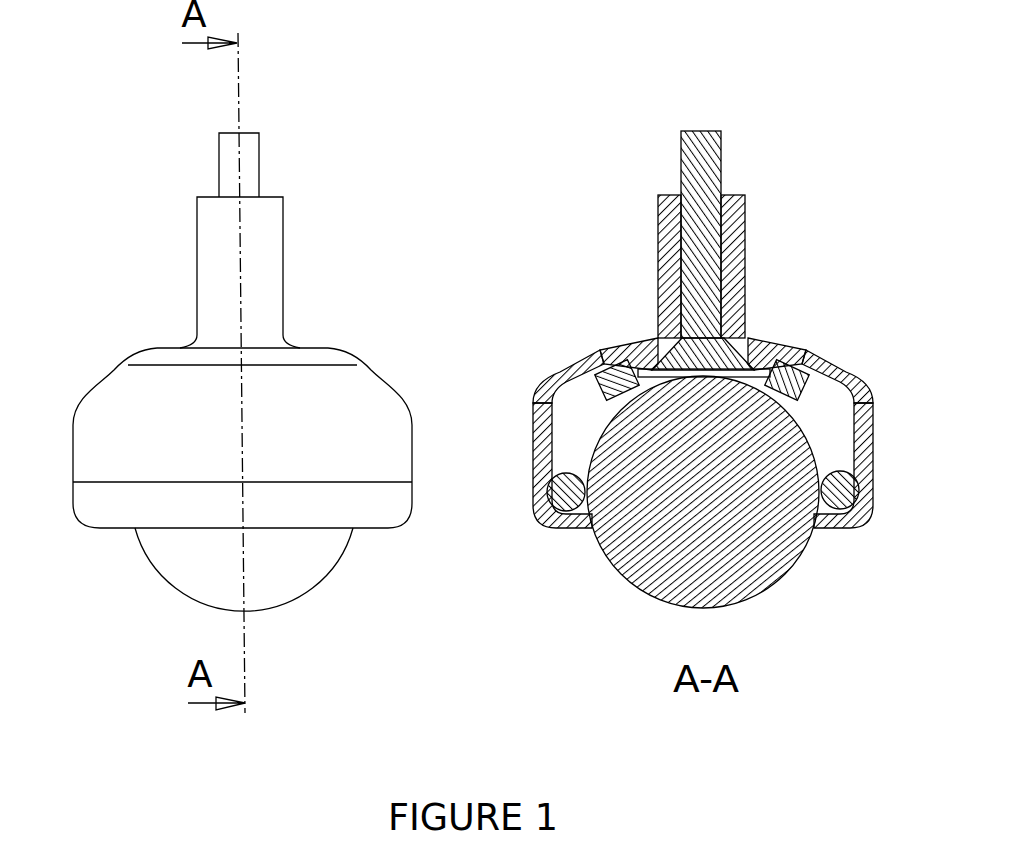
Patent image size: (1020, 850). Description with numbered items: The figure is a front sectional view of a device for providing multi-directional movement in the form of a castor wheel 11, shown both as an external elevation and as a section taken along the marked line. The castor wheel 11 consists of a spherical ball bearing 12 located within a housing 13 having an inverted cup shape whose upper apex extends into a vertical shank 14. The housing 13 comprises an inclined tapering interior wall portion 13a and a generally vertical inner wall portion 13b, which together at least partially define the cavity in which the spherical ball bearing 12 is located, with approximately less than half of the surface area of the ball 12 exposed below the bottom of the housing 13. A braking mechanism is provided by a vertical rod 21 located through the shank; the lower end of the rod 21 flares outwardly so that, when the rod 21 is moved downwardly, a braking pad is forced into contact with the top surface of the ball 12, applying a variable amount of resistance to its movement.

The castor wheel 11 is at (178, 303).
The spherical ball bearing 12 is at (284, 585).
The housing 13 is at (613, 343).
The inclined tapering interior wall portion 13a is at (578, 398).
The generally vertical inner wall portion 13b is at (550, 431).
The vertical shank 14 is at (277, 225).
The vertical rod 21 is at (251, 147).